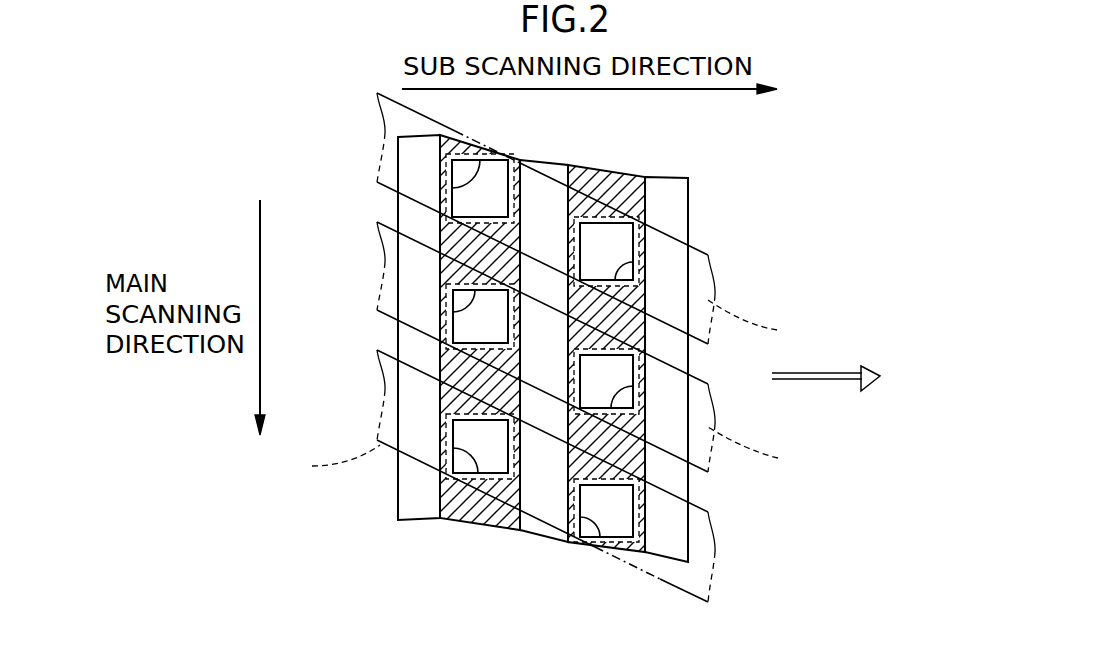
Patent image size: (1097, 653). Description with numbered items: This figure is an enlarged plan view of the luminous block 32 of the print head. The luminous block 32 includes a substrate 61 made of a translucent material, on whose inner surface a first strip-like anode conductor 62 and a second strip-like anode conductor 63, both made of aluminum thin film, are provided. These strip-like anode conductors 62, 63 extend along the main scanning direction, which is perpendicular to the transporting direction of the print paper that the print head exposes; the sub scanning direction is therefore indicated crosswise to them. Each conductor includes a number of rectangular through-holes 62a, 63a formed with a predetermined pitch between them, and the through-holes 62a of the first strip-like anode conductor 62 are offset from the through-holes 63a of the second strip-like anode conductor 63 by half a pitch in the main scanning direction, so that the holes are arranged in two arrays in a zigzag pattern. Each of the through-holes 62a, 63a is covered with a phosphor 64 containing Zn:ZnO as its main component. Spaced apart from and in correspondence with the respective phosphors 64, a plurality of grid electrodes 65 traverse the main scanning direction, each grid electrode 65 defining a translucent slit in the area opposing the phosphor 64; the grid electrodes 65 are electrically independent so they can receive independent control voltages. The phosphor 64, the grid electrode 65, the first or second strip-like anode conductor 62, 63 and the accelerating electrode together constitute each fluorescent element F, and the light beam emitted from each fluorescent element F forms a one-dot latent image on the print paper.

The luminous block 32 is at (812, 192).
The substrate 61 is at (688, 203).
The first strip-like anode conductor 62 is at (430, 148).
The through-holes of the first strip-like anode conductor 62a is at (452, 196).
The second strip-like anode conductor 63 is at (650, 197).
The through-holes of the second strip-like anode conductor 63a is at (690, 278).
The phosphor 64 is at (483, 158).
The grid electrode 65 is at (545, 391).
The fluorescent element F is at (432, 404).